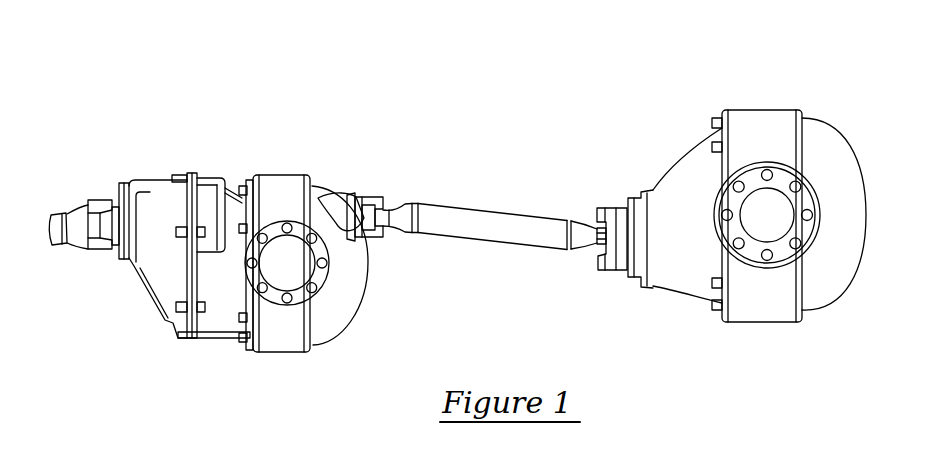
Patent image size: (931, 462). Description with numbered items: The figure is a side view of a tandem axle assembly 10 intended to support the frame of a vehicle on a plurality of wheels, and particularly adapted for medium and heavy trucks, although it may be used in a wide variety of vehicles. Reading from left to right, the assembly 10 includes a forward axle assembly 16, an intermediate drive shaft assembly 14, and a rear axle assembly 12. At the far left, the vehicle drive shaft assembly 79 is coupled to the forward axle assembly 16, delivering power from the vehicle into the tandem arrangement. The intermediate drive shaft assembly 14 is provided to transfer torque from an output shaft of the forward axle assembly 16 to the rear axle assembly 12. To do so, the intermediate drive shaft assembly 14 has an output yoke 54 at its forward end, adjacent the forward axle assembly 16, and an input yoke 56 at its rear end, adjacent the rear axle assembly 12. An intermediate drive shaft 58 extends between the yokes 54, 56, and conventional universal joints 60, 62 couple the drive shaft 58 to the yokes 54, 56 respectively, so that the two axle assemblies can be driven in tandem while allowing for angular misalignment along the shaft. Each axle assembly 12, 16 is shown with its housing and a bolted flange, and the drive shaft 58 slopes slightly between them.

The tandem axle assembly 10 is at (424, 100).
The rear axle assembly 12 is at (760, 105).
The intermediate drive shaft assembly 14 is at (522, 198).
The forward axle assembly 16 is at (283, 169).
The output yoke 54 is at (378, 197).
The input yoke 56 is at (603, 207).
The intermediate drive shaft 58 is at (484, 228).
The universal joint 60 is at (386, 228).
The universal joint 62 is at (592, 258).
The vehicle drive shaft assembly 79 is at (80, 222).